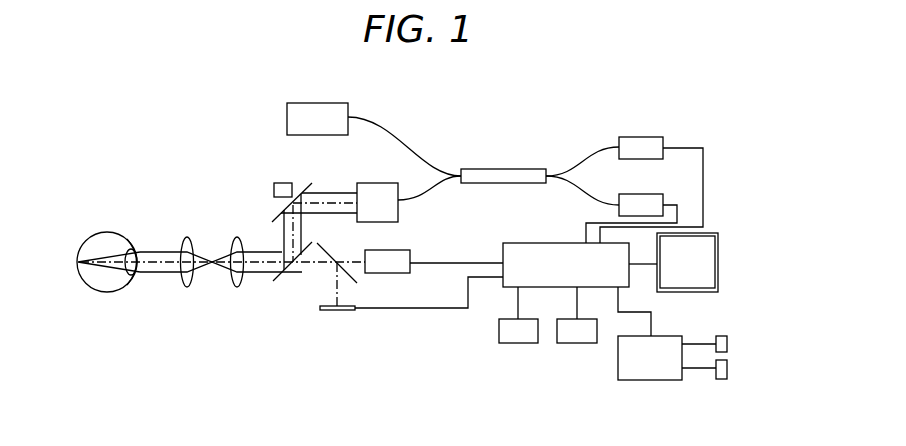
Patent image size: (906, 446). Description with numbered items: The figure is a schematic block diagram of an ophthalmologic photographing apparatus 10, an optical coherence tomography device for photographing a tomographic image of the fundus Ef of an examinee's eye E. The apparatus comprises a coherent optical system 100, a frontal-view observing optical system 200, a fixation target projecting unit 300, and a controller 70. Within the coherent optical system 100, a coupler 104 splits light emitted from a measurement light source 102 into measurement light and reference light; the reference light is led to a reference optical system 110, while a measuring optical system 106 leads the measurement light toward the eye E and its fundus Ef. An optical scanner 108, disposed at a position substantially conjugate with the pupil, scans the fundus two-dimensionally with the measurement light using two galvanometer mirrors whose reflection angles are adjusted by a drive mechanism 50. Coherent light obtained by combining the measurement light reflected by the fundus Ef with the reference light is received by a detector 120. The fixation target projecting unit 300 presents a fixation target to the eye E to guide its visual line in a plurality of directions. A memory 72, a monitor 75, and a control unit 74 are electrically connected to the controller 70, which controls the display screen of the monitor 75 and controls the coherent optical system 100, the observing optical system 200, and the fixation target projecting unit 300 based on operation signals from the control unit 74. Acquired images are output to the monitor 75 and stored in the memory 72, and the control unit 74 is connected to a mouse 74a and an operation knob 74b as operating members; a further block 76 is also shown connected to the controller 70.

The ophthalmologic photographing apparatus 10 is at (478, 88).
The coherent optical system 100 is at (555, 132).
The reference optical system 110 is at (287, 107).
The coupler 104 is at (488, 178).
The detector 120 is at (632, 140).
The light source 102 is at (630, 203).
The optical scanner 108 is at (277, 208).
The drive mechanism 50 is at (283, 183).
The measuring optical system 106 is at (206, 217).
The observing optical system 200 is at (410, 252).
The fixation target projecting unit 300 is at (330, 311).
The controller 70 is at (530, 243).
The memory 72 is at (510, 344).
The operation unit 76 is at (571, 344).
The control unit 74 is at (651, 381).
The monitor 75 is at (690, 293).
The mouse 74a is at (728, 345).
The operation knob 74b is at (728, 370).
The examinee's eye E is at (96, 247).
The fundus Ef is at (84, 283).